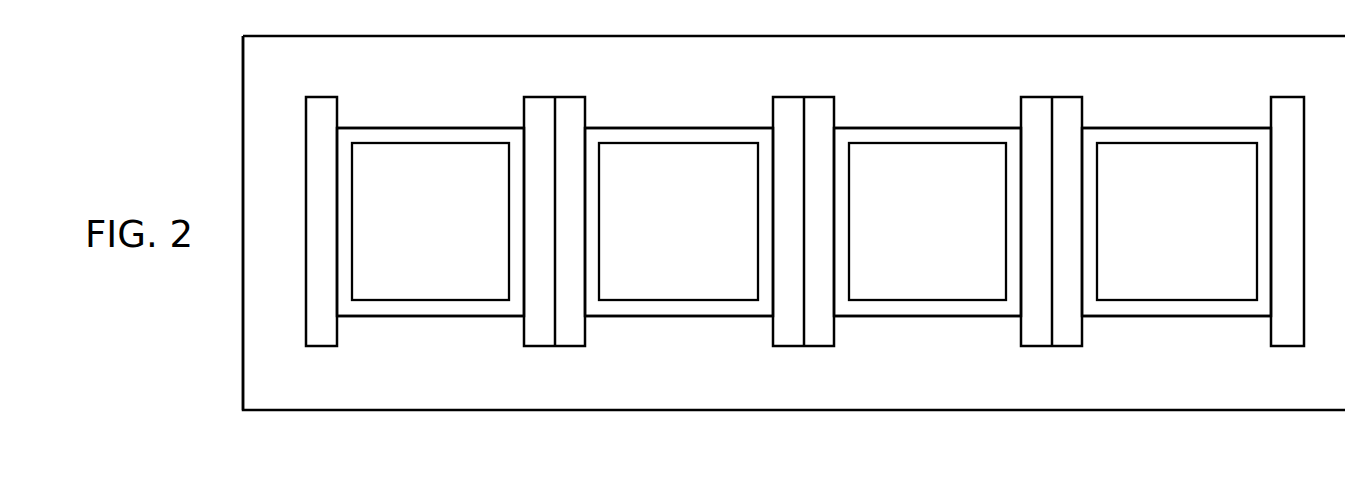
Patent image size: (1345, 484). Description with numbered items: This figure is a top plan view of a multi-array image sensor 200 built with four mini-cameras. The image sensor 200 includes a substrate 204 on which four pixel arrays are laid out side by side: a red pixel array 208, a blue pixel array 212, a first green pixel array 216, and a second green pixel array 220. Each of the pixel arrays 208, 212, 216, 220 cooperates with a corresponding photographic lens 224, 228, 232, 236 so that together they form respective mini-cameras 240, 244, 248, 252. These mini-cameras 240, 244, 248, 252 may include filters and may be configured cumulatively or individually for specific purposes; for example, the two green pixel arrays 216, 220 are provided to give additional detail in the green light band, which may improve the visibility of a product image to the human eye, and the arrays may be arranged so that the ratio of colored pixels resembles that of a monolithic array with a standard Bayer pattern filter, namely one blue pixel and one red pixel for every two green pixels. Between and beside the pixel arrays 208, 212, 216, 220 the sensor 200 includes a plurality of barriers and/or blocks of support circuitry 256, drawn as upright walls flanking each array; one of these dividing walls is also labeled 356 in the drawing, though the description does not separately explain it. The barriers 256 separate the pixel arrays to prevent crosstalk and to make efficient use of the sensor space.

The multi-array image sensor 200 is at (208, 67).
The substrate 204 is at (243, 347).
The red pixel array 208 is at (430, 221).
The blue pixel array 212 is at (678, 221).
The first green pixel array 216 is at (927, 221).
The second green pixel array 220 is at (1177, 221).
The photographic lens 224 is at (421, 128).
The photographic lens 228 is at (680, 128).
The photographic lens 232 is at (935, 128).
The photographic lens 236 is at (1180, 128).
The mini-camera 240 is at (474, 92).
The mini-camera 244 is at (676, 101).
The mini-camera 248 is at (956, 101).
The mini-camera 252 is at (1199, 101).
The barriers and/or blocks of support circuitry 256 is at (335, 348).
The spacer wall 356 is at (790, 348).